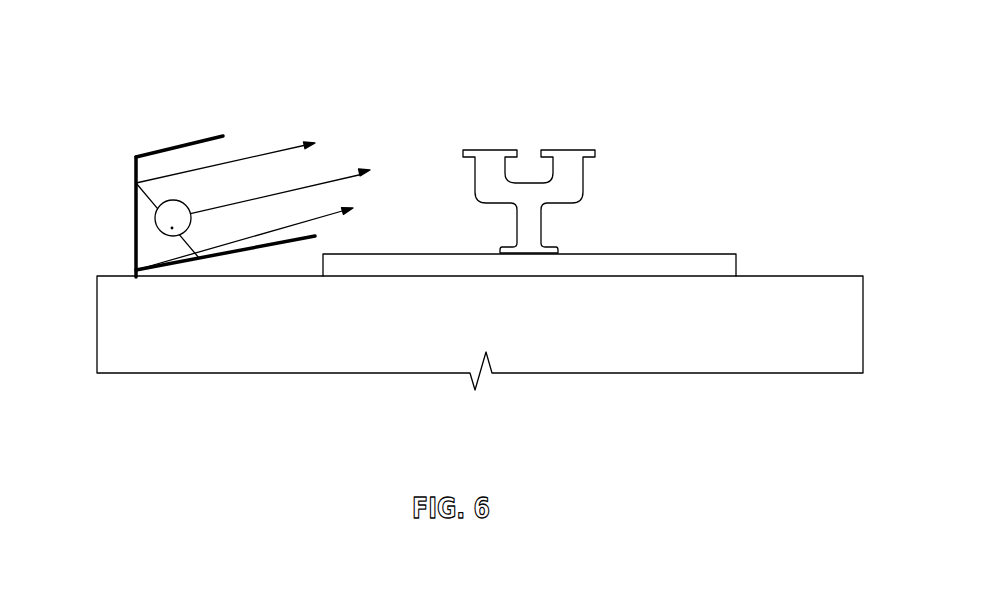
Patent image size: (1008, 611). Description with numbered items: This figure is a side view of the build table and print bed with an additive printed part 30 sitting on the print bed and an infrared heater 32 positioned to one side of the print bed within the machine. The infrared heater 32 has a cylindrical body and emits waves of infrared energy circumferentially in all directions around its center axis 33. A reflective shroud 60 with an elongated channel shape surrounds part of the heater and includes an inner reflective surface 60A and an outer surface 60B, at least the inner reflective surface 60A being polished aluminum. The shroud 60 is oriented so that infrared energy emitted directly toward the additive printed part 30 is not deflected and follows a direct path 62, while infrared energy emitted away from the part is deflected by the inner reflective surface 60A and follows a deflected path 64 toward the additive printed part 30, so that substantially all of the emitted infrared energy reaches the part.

The additive printed part 30 is at (583, 167).
The infrared heater 32 is at (155, 218).
The center axis 33 is at (172, 228).
The reflective shroud 60 is at (182, 196).
The inner reflective surface 60A is at (181, 146).
The outer surface 60B is at (136, 187).
The direct path 62 is at (354, 170).
The deflected path 64 is at (267, 148).